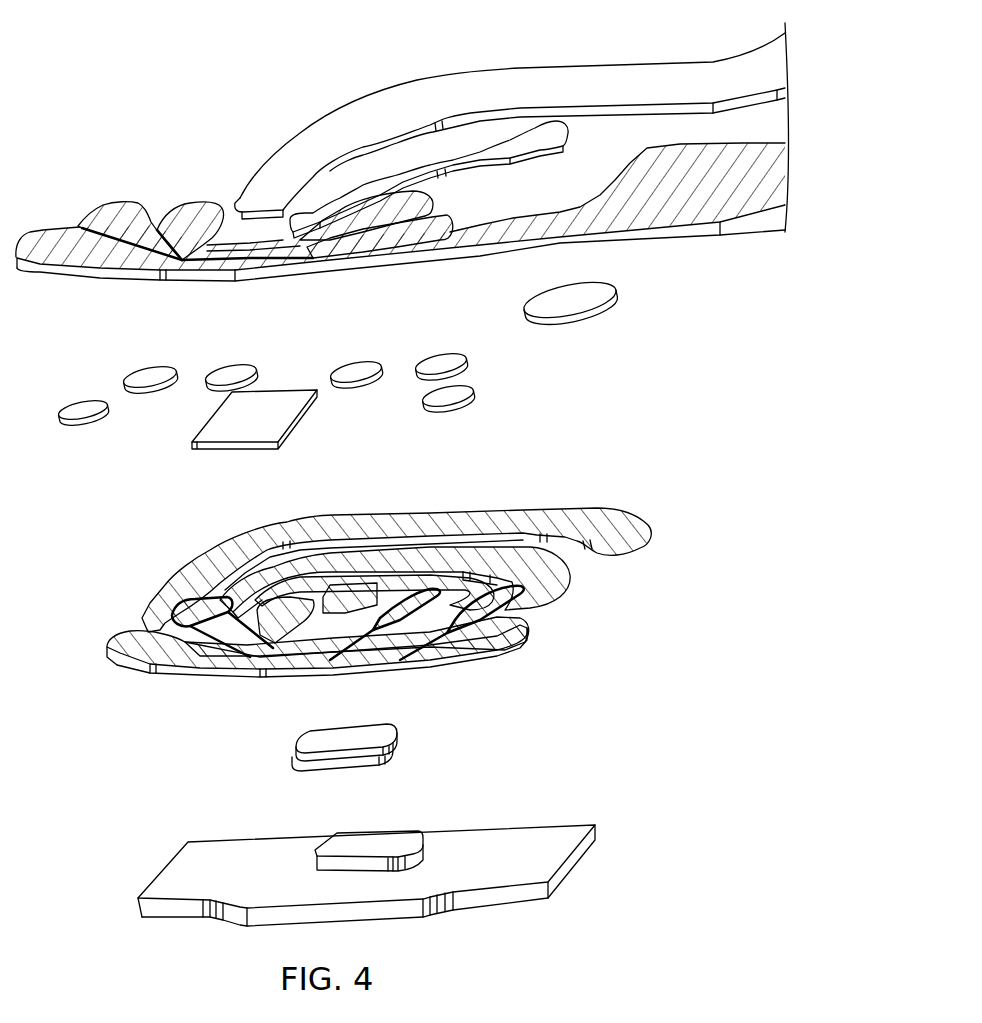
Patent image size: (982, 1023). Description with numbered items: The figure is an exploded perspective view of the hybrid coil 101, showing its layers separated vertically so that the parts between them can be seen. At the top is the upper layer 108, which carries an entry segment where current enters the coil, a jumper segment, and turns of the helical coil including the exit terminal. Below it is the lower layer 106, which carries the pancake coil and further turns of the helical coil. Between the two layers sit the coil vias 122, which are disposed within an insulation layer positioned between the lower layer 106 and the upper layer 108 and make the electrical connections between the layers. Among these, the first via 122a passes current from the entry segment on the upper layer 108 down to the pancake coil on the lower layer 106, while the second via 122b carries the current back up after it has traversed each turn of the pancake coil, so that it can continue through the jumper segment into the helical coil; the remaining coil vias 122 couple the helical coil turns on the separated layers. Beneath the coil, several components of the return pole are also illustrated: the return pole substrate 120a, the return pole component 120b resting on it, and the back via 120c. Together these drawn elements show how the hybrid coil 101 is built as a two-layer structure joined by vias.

The hybrid coil 101 is at (162, 68).
The upper layer 108 is at (813, 37).
The coil vias 122 is at (377, 381).
The first via 122a is at (280, 448).
The second via 122b is at (553, 325).
The lower layer 106 is at (670, 493).
The back via 120c is at (375, 723).
The return pole component 120b is at (405, 831).
The return pole substrate 120a is at (395, 859).